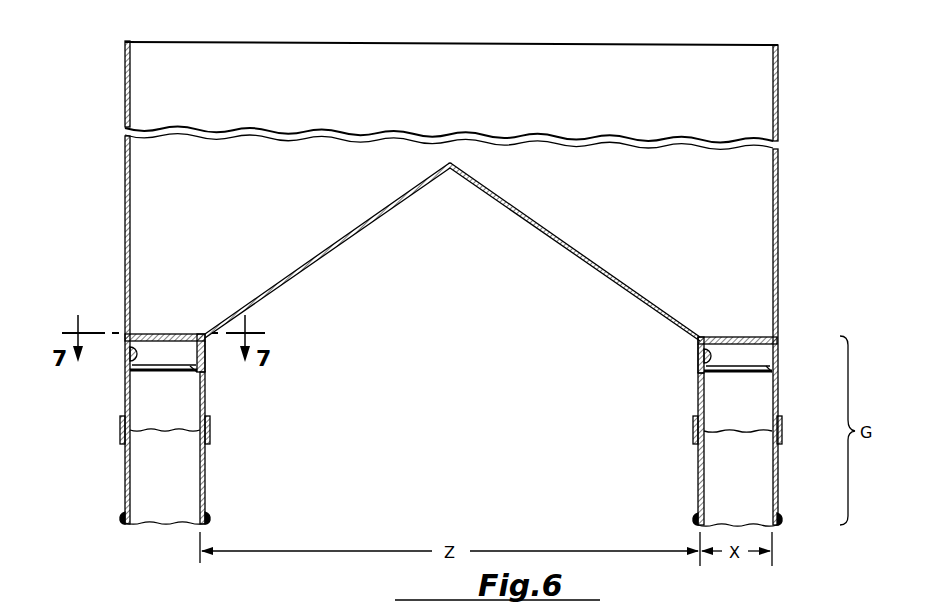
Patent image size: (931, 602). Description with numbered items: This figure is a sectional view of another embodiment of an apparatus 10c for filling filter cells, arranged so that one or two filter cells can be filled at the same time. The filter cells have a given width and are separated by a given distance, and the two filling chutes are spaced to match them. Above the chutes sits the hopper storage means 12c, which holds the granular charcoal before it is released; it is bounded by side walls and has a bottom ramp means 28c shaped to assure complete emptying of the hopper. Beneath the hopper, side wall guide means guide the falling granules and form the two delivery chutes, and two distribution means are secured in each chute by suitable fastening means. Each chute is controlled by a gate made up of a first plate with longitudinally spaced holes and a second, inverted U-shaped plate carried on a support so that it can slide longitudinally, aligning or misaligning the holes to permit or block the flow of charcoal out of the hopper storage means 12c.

The apparatus 10c is at (466, 273).
The hopper storage means 12c is at (738, 126).
The bottom ramp means 28c is at (350, 228).